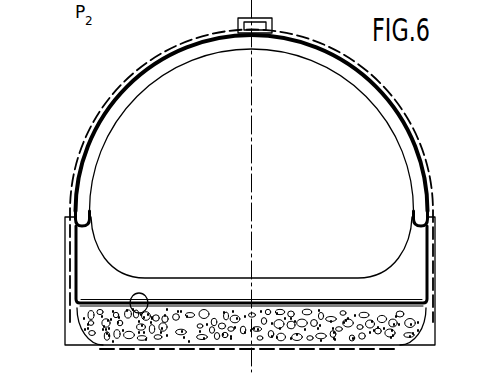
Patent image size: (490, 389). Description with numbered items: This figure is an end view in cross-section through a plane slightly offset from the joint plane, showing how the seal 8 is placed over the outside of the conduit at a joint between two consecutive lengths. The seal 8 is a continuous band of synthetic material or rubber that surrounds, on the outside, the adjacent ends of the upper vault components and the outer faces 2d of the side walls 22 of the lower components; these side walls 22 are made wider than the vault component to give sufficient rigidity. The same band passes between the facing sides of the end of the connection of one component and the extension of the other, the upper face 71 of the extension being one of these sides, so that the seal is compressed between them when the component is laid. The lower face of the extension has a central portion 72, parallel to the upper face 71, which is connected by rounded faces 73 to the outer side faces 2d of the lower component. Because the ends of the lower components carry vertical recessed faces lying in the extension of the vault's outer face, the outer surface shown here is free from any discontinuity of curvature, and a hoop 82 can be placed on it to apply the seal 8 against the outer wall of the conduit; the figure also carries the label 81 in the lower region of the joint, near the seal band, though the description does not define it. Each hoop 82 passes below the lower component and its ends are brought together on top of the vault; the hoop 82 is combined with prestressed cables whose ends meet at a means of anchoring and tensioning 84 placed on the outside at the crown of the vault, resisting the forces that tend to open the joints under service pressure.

The seal 8 is at (432, 262).
The outer face of side wall of lower component 2d is at (65, 256).
The side walls of lower component 22 is at (78, 229).
The upper face of extension 71 is at (131, 312).
The central portion of lower face of extension 72 is at (166, 348).
The rounded faces 73 is at (76, 332).
The bottom plate 81 is at (385, 317).
The hoop 82 is at (392, 96).
The means of anchoring and tensioning 84 is at (243, 18).